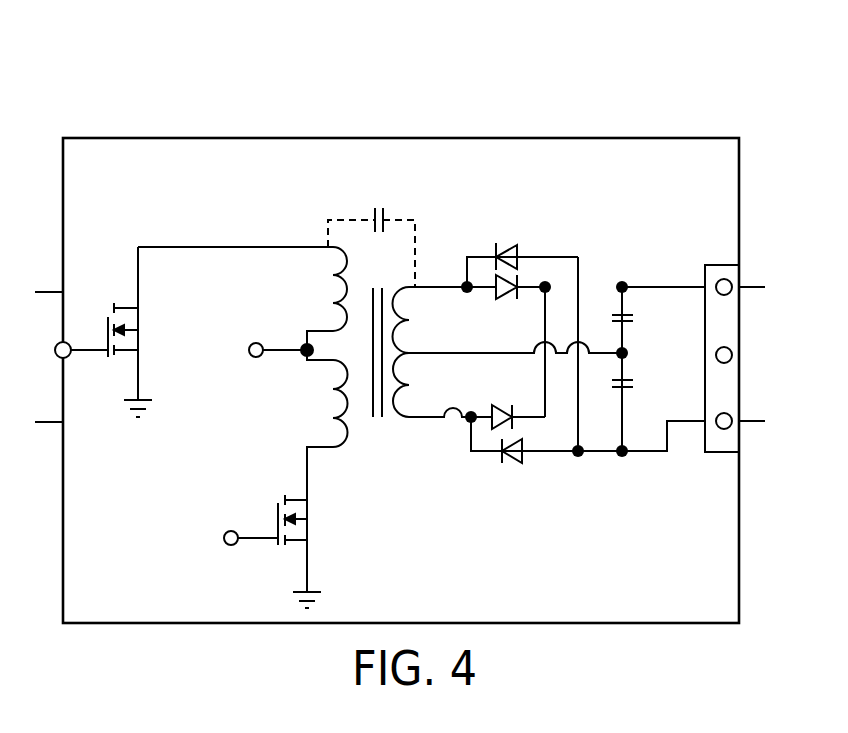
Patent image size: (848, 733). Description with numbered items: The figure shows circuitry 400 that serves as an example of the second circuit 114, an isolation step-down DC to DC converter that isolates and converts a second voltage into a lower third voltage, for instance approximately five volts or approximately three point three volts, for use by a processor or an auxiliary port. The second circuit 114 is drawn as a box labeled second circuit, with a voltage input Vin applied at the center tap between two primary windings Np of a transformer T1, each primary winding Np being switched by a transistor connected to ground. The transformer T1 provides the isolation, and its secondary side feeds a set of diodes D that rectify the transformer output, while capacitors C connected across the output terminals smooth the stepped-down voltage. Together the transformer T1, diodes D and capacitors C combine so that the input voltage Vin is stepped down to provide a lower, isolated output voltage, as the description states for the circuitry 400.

The circuitry 400 is at (693, 52).
The second circuit 114 is at (570, 138).
The transformer T1 is at (380, 373).
The primary winding Np is at (243, 373).
The voltage input Vin is at (260, 346).
The diode D is at (507, 354).
The capacitor C is at (637, 351).